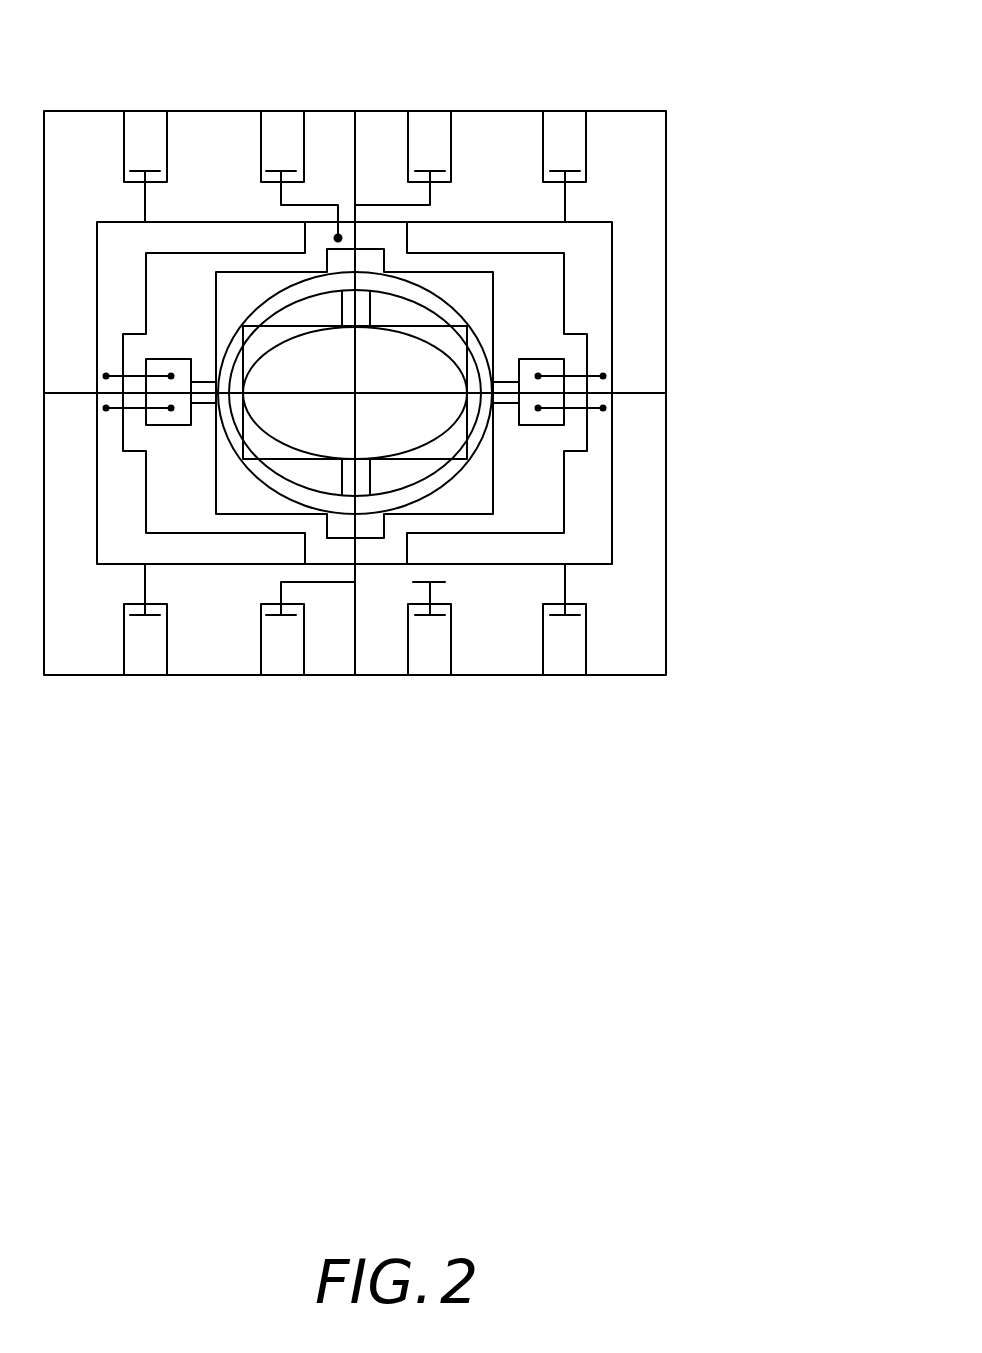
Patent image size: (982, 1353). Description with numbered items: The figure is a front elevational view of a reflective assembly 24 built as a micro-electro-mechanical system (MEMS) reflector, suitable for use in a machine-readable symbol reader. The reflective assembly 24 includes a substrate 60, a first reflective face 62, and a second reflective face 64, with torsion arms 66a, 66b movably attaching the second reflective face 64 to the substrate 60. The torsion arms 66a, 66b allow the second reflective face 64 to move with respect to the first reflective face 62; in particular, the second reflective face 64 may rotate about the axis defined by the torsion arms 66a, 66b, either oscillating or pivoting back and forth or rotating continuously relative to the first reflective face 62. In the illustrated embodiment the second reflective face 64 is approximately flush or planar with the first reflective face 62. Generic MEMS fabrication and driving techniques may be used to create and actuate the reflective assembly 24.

The reflective assembly 24 is at (448, 384).
The substrate 60 is at (667, 205).
The first reflective face 62 is at (432, 477).
The second reflective face 64 is at (432, 345).
The torsion arm 66a is at (372, 305).
The torsion arm 66b is at (338, 478).